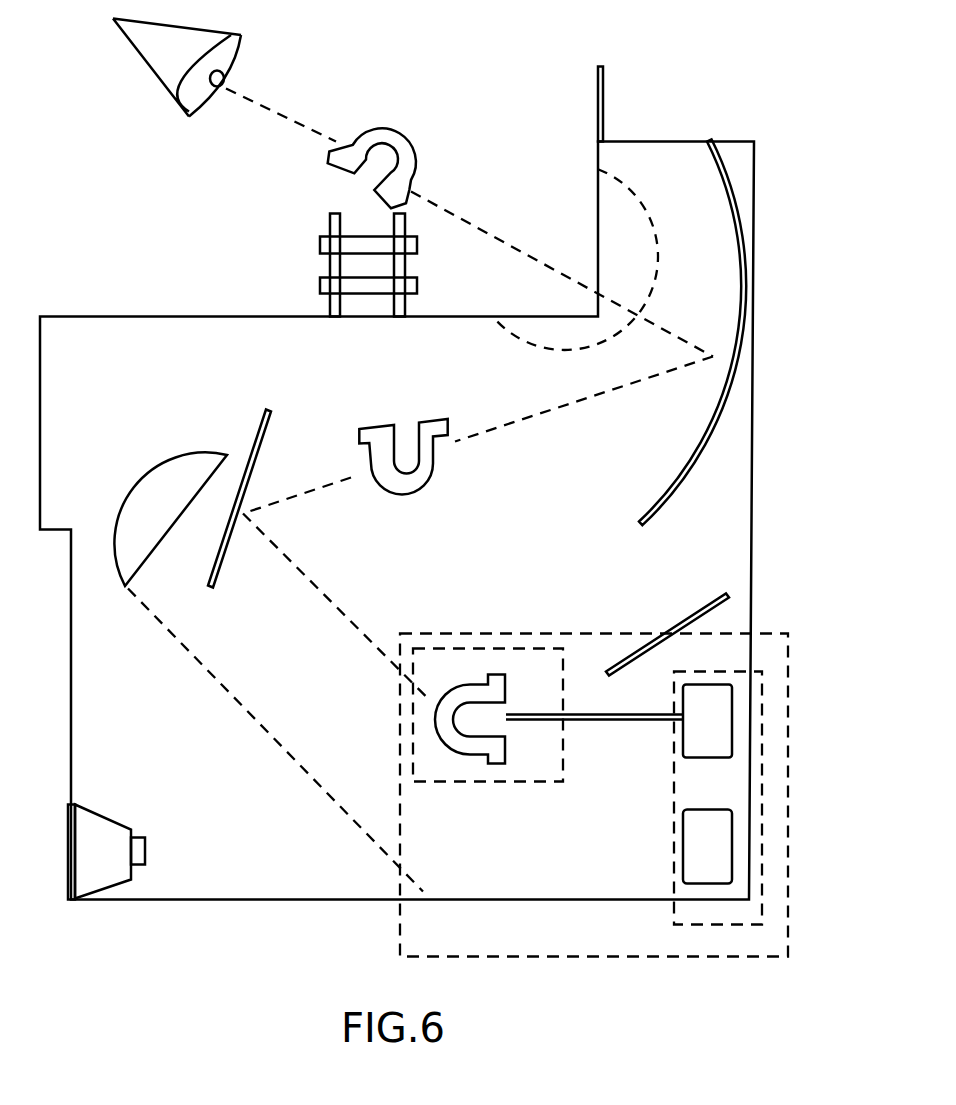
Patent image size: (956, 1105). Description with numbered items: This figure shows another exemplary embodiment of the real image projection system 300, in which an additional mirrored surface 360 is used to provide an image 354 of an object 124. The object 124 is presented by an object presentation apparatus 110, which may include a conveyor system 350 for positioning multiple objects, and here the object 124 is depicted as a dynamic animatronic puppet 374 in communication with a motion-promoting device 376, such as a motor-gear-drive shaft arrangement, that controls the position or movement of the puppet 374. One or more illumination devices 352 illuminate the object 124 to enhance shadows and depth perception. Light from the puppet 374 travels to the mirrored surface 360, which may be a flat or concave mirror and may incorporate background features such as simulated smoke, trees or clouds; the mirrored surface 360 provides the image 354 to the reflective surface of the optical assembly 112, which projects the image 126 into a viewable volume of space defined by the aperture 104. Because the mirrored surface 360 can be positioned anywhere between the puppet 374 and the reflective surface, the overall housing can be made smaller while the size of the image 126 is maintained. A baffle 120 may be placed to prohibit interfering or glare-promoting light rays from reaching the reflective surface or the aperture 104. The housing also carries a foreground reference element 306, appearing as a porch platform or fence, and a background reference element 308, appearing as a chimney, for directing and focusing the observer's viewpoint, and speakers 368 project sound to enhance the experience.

The real image projection system 300 is at (748, 126).
The background reference element 308 is at (603, 105).
The aperture 104 is at (646, 197).
The optical assembly 112 is at (735, 188).
The projected image 126 is at (410, 112).
The foreground reference element 306 is at (418, 287).
The illumination device 352 is at (159, 452).
The mirrored surface 360 is at (258, 408).
The image of object 354 is at (428, 420).
The object presentation apparatus 110 is at (512, 632).
The object 124 is at (538, 803).
The dynamic animatronic puppet 374 is at (500, 692).
The motion-promoting device 376 is at (692, 757).
The conveyor system 350 is at (680, 695).
The baffle 120 is at (672, 625).
The speaker 368 is at (104, 808).